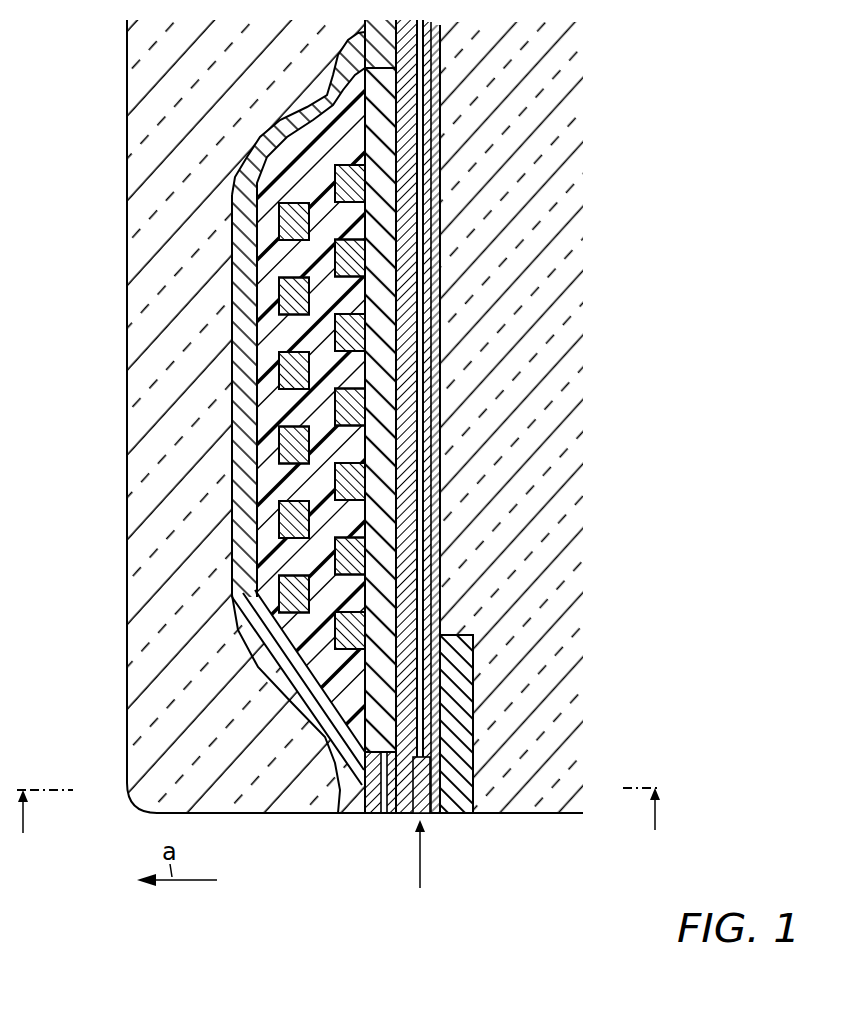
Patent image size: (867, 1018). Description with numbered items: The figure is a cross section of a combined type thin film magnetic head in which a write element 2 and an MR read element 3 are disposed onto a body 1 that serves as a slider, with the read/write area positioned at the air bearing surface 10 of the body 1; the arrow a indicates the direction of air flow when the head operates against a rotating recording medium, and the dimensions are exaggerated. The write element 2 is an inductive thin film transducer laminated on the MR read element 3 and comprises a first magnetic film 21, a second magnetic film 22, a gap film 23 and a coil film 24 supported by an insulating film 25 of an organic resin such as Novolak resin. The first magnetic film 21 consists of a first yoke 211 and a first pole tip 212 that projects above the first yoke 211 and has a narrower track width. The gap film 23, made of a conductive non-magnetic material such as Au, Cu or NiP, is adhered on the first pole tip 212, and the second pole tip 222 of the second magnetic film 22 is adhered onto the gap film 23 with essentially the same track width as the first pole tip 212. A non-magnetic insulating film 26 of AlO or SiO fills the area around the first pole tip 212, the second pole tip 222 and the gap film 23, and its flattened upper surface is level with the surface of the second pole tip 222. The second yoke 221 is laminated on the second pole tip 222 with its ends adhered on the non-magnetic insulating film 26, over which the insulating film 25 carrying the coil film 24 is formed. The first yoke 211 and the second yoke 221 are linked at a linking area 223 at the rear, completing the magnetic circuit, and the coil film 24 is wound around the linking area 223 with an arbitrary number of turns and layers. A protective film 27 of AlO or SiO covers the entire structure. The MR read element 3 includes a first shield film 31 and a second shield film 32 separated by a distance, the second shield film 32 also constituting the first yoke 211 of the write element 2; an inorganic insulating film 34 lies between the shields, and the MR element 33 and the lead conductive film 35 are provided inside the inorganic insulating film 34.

The body 1 is at (576, 281).
The write element 2 is at (272, 708).
The MR read element 3 is at (417, 866).
The air bearing surface 10 is at (550, 813).
The first magnetic film 21 is at (428, 433).
The second magnetic film 22 is at (222, 624).
The gap film 23 is at (362, 803).
The coil film 24 is at (292, 298).
The insulating film 25 is at (258, 513).
The non-magnetic insulating film 26 is at (380, 563).
The protective film 27 is at (152, 725).
The first shield film 31 is at (470, 695).
The second shield film 32 is at (405, 488).
The MR element 33 is at (425, 812).
The inorganic insulating film 34 is at (440, 148).
The lead conductive film 35 is at (427, 208).
The first yoke 211 is at (398, 620).
The first pole tip 212 is at (386, 803).
The second yoke 221 is at (244, 228).
The second pole tip 222 is at (322, 787).
The linking area 223 is at (394, 42).